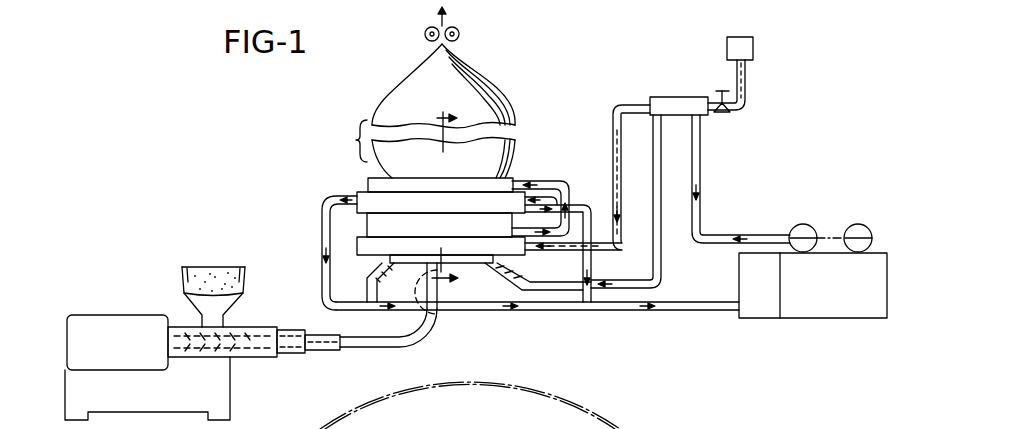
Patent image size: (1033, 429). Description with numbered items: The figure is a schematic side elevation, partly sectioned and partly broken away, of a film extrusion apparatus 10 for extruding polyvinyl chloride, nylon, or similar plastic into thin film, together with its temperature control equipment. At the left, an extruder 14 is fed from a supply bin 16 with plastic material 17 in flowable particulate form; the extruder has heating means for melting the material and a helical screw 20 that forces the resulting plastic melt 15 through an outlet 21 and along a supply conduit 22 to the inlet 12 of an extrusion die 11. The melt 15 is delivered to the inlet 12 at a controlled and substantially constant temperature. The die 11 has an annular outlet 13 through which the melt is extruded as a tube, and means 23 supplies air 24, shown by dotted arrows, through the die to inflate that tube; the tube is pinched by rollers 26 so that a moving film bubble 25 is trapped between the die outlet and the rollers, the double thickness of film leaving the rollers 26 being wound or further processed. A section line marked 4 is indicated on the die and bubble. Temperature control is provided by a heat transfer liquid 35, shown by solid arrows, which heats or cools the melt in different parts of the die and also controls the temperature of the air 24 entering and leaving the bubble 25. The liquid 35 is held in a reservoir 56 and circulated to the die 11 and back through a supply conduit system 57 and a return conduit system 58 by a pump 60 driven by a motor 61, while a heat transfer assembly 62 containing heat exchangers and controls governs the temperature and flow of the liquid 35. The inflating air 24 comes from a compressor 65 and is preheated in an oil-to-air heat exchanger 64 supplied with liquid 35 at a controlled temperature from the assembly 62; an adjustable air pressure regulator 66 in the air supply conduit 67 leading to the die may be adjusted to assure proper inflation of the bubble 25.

The section line 4- 4 is at (455, 198).
The apparatus 10 is at (286, 112).
The extrusion die 11 is at (305, 167).
The inlet 12 is at (441, 316).
The annular outlet 13 is at (514, 172).
The extruder 14 is at (118, 325).
The plastic melt 15 is at (434, 333).
The supply bin 16 is at (236, 306).
The plastic material 17 is at (207, 280).
The helical screw 20 is at (246, 358).
The outlet 21 is at (334, 350).
The supply conduit 22 is at (390, 349).
The air supplying means 23 is at (759, 82).
The air 24 is at (612, 128).
The film bubble 25 is at (481, 72).
The rollers 26 is at (459, 28).
The heat transfer liquid 35 is at (701, 206).
The reservoir 56 is at (810, 310).
The supply conduit system 57 is at (754, 226).
The return conduit system 58 is at (697, 312).
The pump 60 is at (810, 229).
The motor 61 is at (864, 227).
The heat transfer assembly 62 is at (762, 300).
The heat exchanger 64 is at (660, 97).
The compressor 65 is at (753, 48).
The air pressure regulator 66 is at (718, 97).
The supply conduit 67 is at (731, 111).